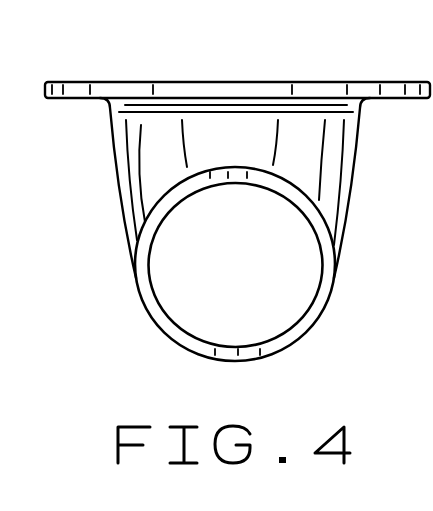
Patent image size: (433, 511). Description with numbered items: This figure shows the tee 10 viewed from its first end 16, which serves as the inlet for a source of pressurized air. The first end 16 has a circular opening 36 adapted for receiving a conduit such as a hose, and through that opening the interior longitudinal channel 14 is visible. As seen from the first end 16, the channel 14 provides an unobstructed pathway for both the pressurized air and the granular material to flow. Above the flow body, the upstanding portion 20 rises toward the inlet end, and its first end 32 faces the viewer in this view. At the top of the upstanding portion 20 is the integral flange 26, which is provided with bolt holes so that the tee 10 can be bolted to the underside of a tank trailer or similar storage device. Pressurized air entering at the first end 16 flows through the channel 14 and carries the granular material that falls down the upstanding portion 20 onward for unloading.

The tee 10 is at (102, 157).
The interior longitudinal channel 14 is at (218, 278).
The first end 16 is at (136, 286).
The upstanding portion 20 is at (302, 147).
The integral flange 26 is at (163, 81).
The first end of the upstanding portion 32 is at (253, 137).
The circular opening 36 is at (300, 337).